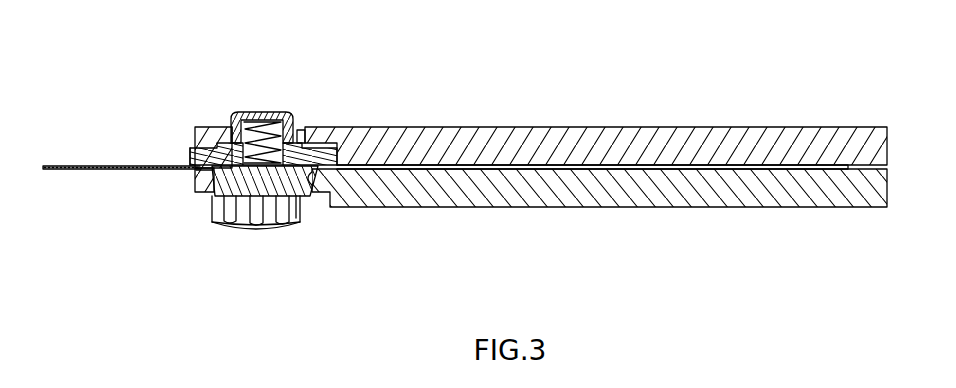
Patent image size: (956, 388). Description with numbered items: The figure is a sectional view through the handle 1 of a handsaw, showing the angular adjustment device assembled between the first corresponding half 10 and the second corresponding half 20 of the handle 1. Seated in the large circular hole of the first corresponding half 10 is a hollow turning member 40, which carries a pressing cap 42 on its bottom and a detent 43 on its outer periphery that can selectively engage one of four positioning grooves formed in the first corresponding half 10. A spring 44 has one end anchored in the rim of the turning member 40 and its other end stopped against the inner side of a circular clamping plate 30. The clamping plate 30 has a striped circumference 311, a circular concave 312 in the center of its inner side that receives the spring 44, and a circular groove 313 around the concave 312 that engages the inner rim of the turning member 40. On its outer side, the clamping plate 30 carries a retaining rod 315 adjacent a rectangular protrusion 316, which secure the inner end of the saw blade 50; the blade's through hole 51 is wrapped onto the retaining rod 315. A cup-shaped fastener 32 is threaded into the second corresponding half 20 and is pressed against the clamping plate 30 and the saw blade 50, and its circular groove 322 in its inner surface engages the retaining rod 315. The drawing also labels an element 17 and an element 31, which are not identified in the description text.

The handle 1 is at (541, 155).
The first corresponding half 10 is at (746, 132).
The thin plate / board 17 is at (689, 165).
The second corresponding half 20 is at (747, 196).
The circular clamping plate 30 is at (240, 205).
The shaft 31 is at (196, 150).
The striped circumference 311 is at (193, 157).
The circular concave 312 is at (283, 205).
The circular groove 313 is at (312, 206).
The retaining rod 315 is at (229, 222).
The rectangular protrusion 316 is at (252, 200).
The cup-shaped fastener 32 is at (244, 247).
The circular groove 322 is at (300, 207).
The hollow turning member 40 is at (255, 96).
The pressing cap 42 is at (252, 112).
The detent 43 is at (307, 131).
The spring 44 is at (274, 130).
The saw blade 50 is at (125, 148).
The through hole 51 is at (197, 178).